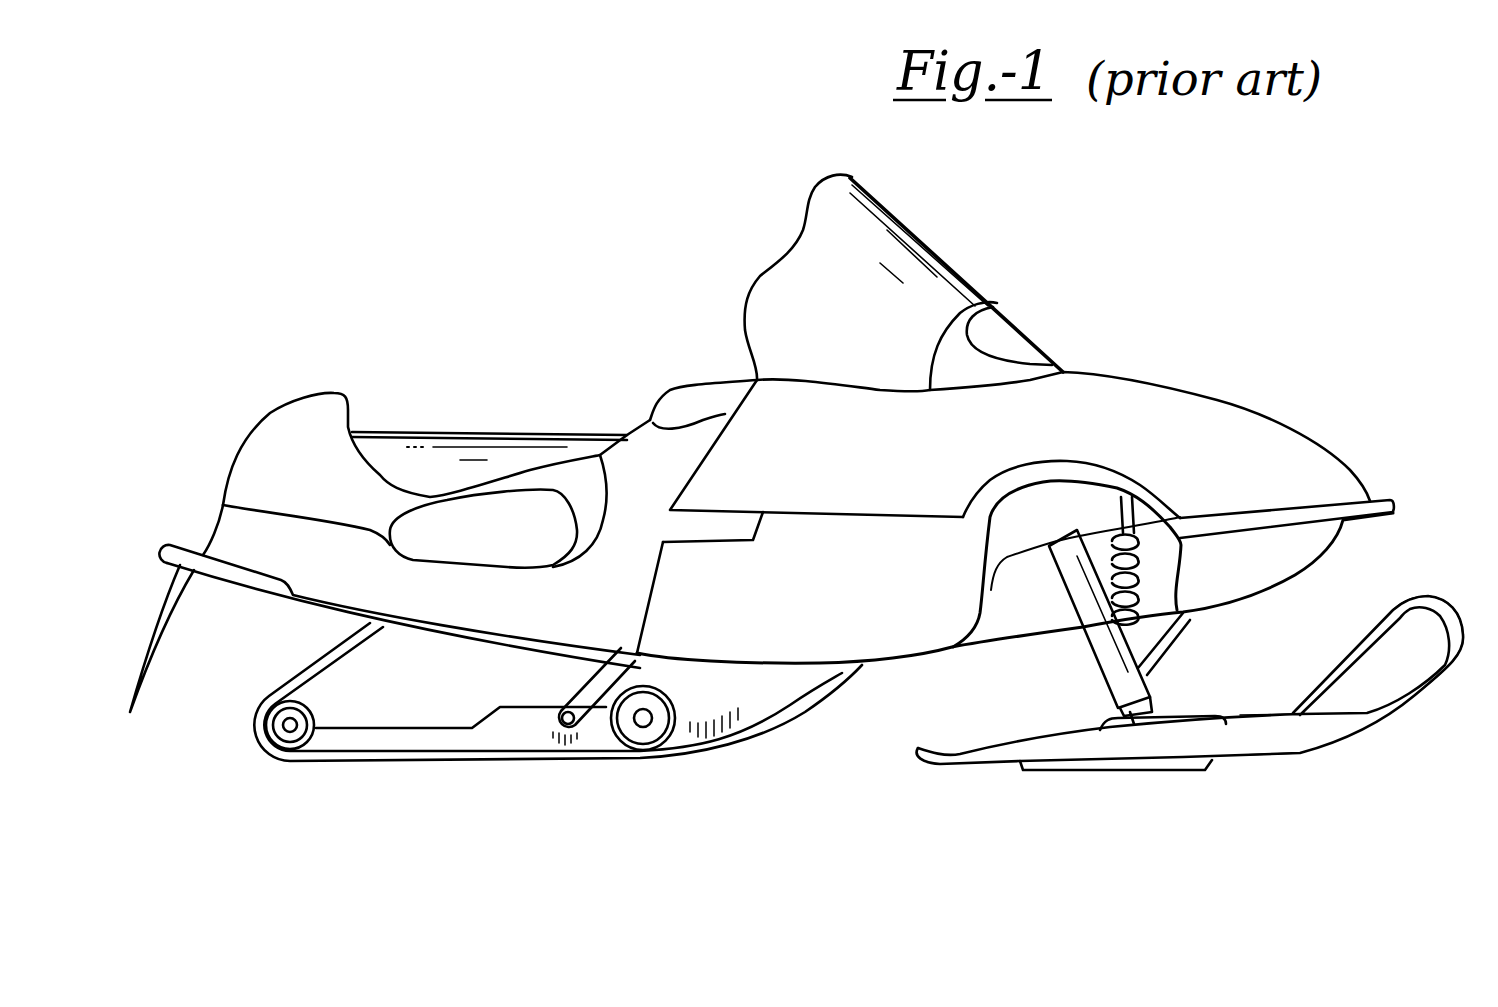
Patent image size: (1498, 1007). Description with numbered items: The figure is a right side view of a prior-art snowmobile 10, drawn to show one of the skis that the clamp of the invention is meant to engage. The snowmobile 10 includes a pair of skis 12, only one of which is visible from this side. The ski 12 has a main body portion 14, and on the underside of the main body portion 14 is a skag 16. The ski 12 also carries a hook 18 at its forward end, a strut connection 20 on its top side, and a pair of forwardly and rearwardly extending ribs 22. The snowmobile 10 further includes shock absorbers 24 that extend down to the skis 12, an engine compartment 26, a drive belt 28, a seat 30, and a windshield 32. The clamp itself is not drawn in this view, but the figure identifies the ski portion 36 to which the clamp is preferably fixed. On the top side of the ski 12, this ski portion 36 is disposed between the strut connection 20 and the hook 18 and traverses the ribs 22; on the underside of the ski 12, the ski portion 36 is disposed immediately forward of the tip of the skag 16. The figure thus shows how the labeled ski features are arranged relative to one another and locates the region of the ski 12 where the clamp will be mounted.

The snowmobile 10 is at (1174, 290).
The ski 12 is at (930, 767).
The main body portion 14 is at (973, 764).
The skag 16 is at (1153, 773).
The hook 18 is at (1414, 592).
The strut connection 20 is at (1187, 716).
The ribs 22 is at (1043, 737).
The shock absorbers 24 is at (1062, 588).
The engine compartment 26 is at (1218, 401).
The drive belt 28 is at (533, 766).
The seat 30 is at (460, 432).
The windshield 32 is at (915, 233).
The ski portion 36 is at (1270, 716).